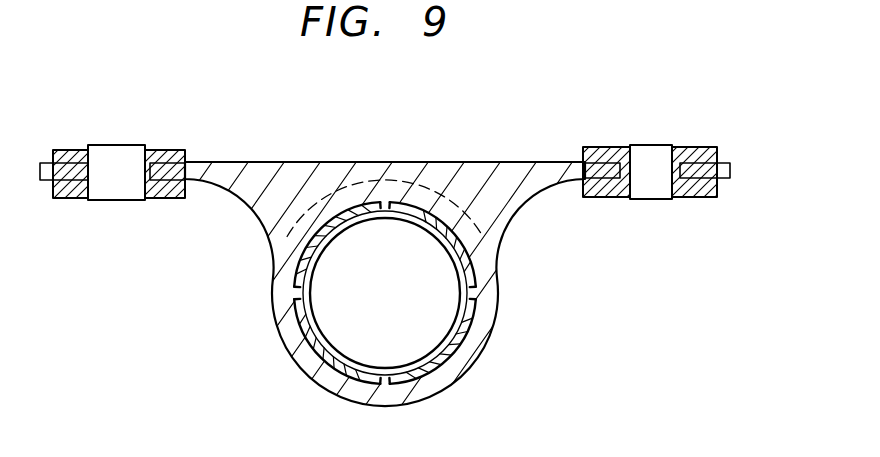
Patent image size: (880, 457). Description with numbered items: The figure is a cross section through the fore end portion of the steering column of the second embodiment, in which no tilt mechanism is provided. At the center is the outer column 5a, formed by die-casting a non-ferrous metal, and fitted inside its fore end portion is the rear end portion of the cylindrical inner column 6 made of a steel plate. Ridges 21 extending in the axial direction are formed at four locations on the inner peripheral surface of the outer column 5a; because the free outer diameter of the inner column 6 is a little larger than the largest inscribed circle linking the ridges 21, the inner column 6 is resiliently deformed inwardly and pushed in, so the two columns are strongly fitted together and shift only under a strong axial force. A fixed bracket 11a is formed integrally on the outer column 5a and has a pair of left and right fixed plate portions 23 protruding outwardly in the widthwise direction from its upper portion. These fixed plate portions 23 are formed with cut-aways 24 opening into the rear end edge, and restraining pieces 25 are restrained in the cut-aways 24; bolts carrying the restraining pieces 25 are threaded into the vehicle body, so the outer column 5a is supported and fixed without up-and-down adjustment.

The outer column 5a is at (487, 281).
The inner column 6 is at (480, 357).
The fixed bracket 11a is at (258, 205).
The ridges 21 is at (388, 372).
The fixed plate portions 23 is at (175, 172).
The cut-aways 24 is at (100, 162).
The restraining pieces 25 is at (69, 160).